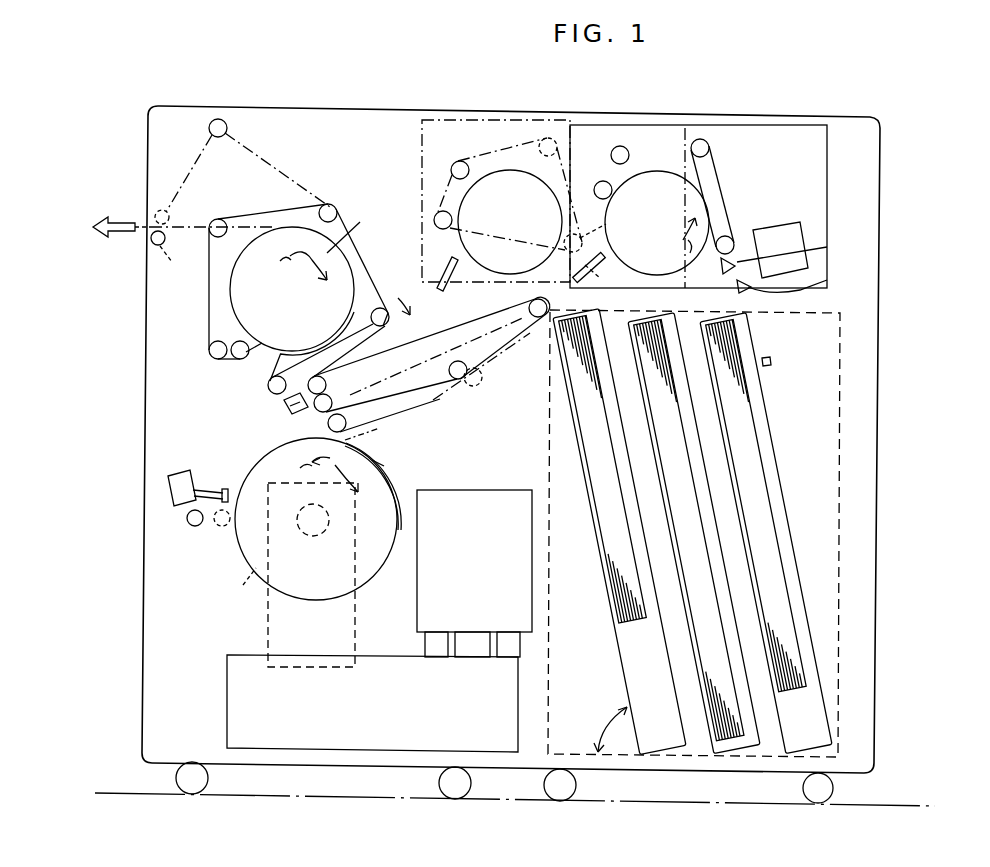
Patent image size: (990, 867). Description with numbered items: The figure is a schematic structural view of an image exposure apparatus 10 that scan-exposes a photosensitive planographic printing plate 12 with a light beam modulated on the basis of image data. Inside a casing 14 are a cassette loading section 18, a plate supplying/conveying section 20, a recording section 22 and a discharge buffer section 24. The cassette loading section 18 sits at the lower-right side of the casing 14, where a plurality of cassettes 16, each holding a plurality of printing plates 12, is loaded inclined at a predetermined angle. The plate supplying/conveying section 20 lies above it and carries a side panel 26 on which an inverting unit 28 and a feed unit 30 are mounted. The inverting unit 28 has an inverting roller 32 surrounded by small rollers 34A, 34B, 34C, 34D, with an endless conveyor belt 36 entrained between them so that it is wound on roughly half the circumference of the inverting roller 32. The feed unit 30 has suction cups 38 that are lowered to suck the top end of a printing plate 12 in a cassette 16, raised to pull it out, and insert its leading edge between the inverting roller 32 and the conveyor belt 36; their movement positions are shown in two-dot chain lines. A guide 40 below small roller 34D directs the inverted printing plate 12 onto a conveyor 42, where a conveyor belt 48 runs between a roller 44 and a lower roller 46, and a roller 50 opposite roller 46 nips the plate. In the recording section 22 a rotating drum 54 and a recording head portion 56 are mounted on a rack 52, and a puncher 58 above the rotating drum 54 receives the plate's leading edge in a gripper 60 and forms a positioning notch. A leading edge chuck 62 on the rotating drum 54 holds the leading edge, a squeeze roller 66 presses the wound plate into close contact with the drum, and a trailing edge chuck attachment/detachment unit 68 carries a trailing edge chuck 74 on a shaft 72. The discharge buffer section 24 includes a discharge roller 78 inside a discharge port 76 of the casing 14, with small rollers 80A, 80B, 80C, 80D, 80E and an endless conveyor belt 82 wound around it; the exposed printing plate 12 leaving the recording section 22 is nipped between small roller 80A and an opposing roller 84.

The image exposure apparatus 10 is at (935, 95).
The photosensitive planographic printing plate 12 is at (712, 300).
The casing 14 is at (882, 252).
The cassette 16 is at (620, 560).
The cassette loading section 18 is at (860, 396).
The plate supplying/conveying section 20 is at (850, 128).
The recording section 22 is at (212, 578).
The discharge buffer section 24 is at (365, 132).
The side panel 26 is at (442, 122).
The inverting unit 28 is at (510, 125).
The feed unit 30 is at (812, 226).
The inverting roller 32 is at (500, 155).
The small roller 34A is at (608, 225).
The small roller 34B is at (557, 140).
The small roller 34C is at (450, 168).
The small roller 34D is at (470, 255).
The conveyor belt 36 is at (434, 218).
The suction cup 38 is at (820, 250).
The guide 40 is at (450, 292).
The conveyor 42 is at (396, 297).
The roller 44 is at (582, 286).
The roller 46 is at (345, 392).
The conveyor belt 48 is at (398, 352).
The roller 50 is at (335, 372).
The rack 52 is at (378, 666).
The rotating drum 54 is at (410, 480).
The recording head portion 56 is at (503, 498).
The puncher 58 is at (288, 410).
The gripper 60 is at (280, 397).
The leading edge chuck 62 is at (290, 440).
The squeeze roller 66 is at (220, 528).
The trailing edge chuck attachment/detachment unit 68 is at (180, 470).
The shaft 72 is at (196, 480).
The trailing edge chuck 74 is at (228, 488).
The discharge port 76 is at (145, 215).
The discharge roller 78 is at (355, 229).
The small roller 80A is at (168, 214).
The small roller 80B is at (226, 122).
The small roller 80C is at (333, 203).
The small roller 80D is at (383, 306).
The small roller 80E is at (283, 368).
The conveyor belt 82 is at (282, 158).
The roller 84 is at (282, 332).